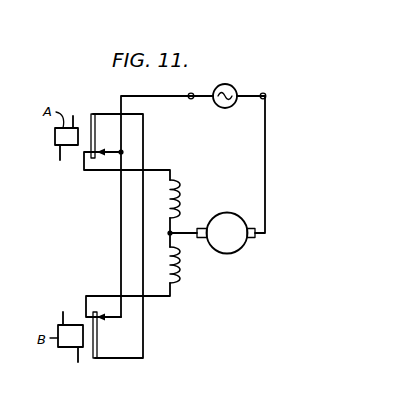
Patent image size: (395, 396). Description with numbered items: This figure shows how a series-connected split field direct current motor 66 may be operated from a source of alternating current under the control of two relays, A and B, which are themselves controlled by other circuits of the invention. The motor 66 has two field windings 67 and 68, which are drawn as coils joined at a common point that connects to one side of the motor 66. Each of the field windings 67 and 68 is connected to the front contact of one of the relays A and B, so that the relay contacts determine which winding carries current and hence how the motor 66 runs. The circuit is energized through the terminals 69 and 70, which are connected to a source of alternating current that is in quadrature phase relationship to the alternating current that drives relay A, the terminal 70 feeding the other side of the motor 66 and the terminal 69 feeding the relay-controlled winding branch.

The direct current motor 66 is at (236, 204).
The field winding 67 is at (178, 198).
The field winding 68 is at (181, 273).
The terminal 69 is at (191, 93).
The terminal 70 is at (264, 93).